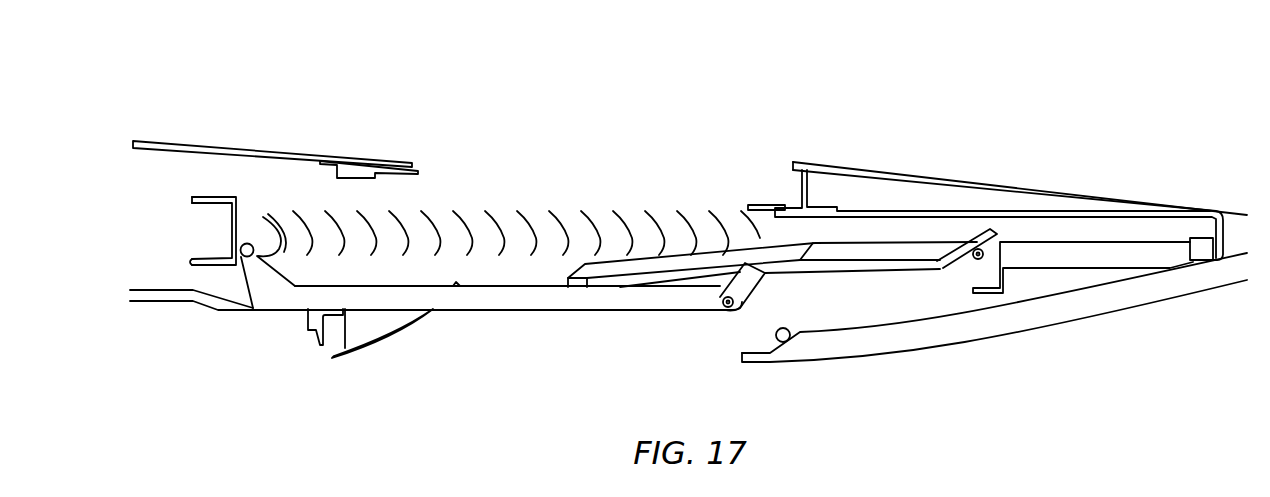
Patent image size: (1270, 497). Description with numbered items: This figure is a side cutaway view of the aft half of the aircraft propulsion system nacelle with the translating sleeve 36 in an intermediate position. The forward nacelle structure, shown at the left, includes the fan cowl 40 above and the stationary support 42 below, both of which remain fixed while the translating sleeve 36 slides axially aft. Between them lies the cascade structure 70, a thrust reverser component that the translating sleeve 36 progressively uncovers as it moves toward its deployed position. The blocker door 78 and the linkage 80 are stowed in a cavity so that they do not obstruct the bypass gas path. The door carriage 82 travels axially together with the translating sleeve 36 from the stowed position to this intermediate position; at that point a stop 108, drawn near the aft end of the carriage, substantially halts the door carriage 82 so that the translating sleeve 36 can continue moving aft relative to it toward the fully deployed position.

The translating sleeve 36 is at (1002, 182).
The fan cowl 40 is at (203, 147).
The stationary support 42 is at (210, 302).
The cascade structure 70 is at (553, 206).
The blocker door 78 is at (790, 270).
The linkage 80 is at (487, 312).
The door carriage 82 is at (1078, 257).
The stop 108 is at (1200, 253).